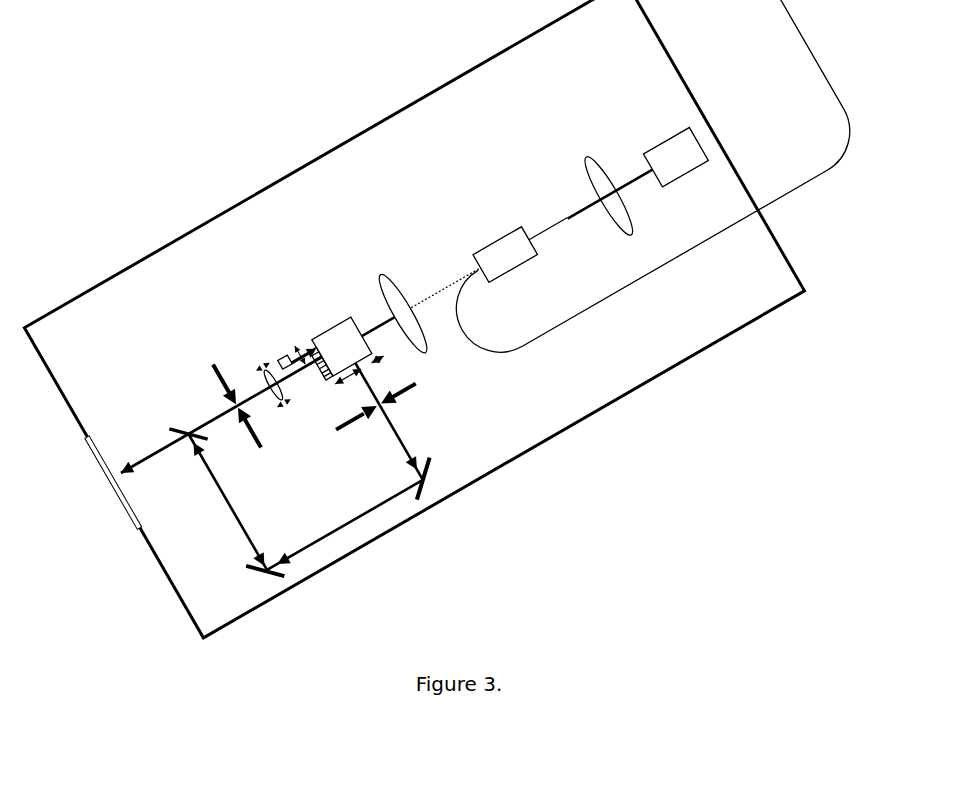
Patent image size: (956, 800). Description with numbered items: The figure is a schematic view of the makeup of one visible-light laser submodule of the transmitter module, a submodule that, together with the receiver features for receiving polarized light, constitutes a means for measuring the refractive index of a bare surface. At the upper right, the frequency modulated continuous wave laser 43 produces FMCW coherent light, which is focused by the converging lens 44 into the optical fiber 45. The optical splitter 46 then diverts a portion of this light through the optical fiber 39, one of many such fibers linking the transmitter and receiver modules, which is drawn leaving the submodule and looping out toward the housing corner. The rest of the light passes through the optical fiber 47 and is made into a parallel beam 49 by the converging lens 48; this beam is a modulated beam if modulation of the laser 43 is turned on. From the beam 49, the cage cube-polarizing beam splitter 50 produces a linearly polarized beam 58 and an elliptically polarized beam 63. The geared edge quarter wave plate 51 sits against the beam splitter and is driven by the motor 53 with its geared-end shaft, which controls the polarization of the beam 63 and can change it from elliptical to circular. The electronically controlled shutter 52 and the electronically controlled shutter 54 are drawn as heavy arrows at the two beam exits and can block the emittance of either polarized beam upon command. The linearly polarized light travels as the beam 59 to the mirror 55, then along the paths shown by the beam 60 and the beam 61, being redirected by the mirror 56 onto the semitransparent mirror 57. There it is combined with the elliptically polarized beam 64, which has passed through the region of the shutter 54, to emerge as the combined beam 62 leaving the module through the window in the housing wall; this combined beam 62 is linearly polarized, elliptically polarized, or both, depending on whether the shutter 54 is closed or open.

The optical fiber 39 is at (796, 85).
The frequency modulated continuous wave laser 43 is at (675, 157).
The converging lens 44 is at (607, 187).
The optical fiber 45 is at (589, 205).
The optical splitter 46 is at (505, 255).
The optical fiber 47 is at (619, 239).
The converging lens 48 is at (403, 306).
The modulated beam 49 is at (378, 318).
The cage cube-polarizing beam splitter 50 is at (339, 320).
The geared edge quarter wave plate 51 is at (323, 386).
The electronically controlled shutter 52 is at (412, 390).
The motor with geared-end shaft 53 is at (281, 346).
The electronically controlled shutter 54 is at (240, 416).
The mirror 55 is at (429, 479).
The mirror 56 is at (264, 574).
The semitransparent mirror 57 is at (186, 429).
The beam of linearly polarized light 58 is at (347, 399).
The beam of linearly polarized light 59 is at (401, 442).
The beam of linearly polarized light 60 is at (345, 524).
The beam of linearly polarized light 61 is at (227, 502).
The combined beam of light 62 is at (155, 460).
The beam of elliptically polarized light 63 is at (279, 381).
The elliptically polarized beam 64 is at (213, 419).